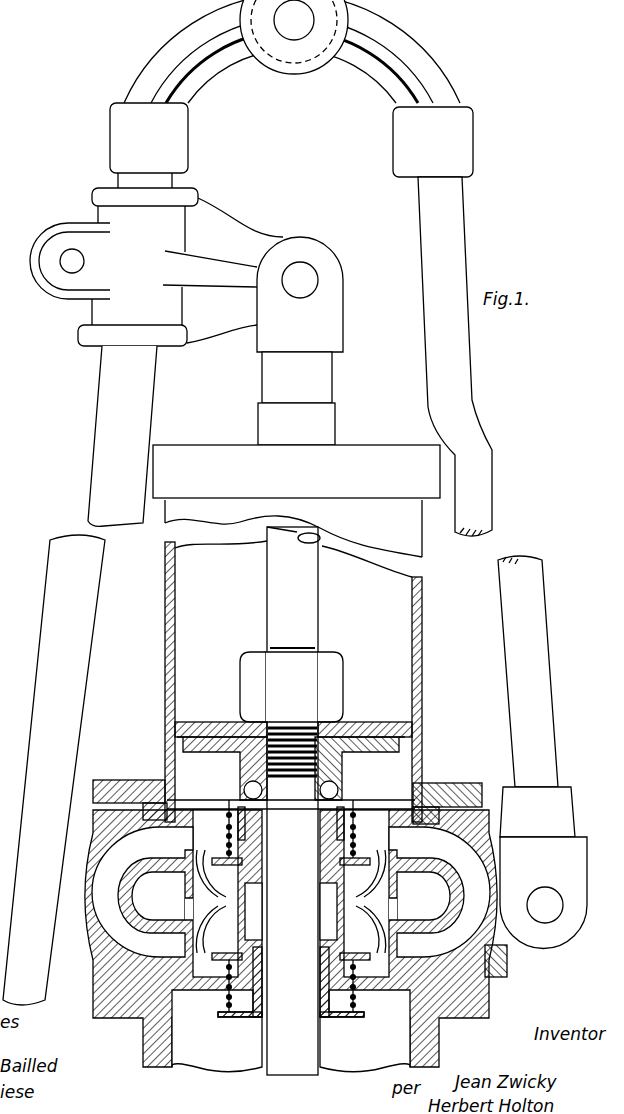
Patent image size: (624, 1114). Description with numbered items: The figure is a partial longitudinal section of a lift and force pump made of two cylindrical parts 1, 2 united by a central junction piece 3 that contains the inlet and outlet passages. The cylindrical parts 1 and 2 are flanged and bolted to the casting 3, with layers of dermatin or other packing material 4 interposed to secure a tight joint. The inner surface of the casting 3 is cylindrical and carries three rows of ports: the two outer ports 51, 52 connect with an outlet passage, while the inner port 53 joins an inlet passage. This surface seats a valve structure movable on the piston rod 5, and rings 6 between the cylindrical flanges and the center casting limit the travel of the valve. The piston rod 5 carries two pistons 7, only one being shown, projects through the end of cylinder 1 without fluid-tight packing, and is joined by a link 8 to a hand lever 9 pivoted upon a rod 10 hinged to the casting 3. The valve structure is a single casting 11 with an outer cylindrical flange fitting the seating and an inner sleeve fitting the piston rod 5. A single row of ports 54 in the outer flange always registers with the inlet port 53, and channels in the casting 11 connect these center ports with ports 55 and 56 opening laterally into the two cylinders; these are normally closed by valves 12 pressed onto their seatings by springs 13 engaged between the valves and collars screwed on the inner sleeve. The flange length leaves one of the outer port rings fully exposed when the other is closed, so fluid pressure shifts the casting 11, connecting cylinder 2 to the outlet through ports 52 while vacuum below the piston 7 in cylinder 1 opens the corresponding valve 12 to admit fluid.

The cylindrical part 1 is at (446, 632).
The cylindrical part 2 is at (419, 1053).
The central junction piece 3 is at (485, 947).
The packing material 4 is at (430, 818).
The piston rod 5 is at (308, 1047).
The ring 6 is at (162, 802).
The piston 7 is at (193, 737).
The link 8 is at (188, 338).
The hand lever 9 is at (100, 452).
The rod 10 is at (458, 228).
The valve casting 11 is at (390, 873).
The valve 12 is at (223, 1017).
The spring 13 is at (214, 817).
The outer port 51 is at (291, 892).
The outer port 52 is at (287, 955).
The inner port 53 is at (291, 896).
The port 54 is at (189, 913).
The port 55 is at (291, 909).
The port 56 is at (227, 953).